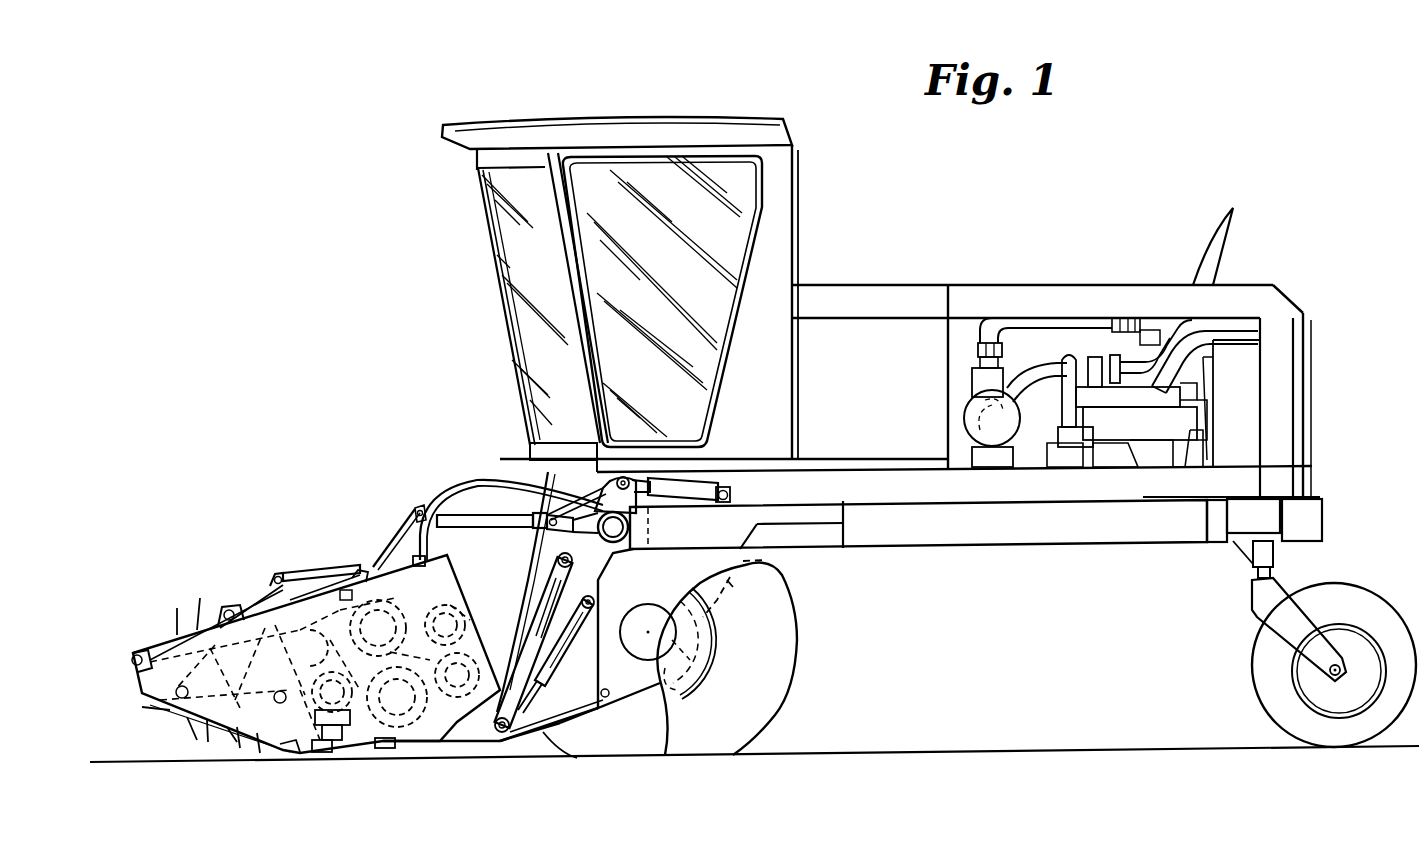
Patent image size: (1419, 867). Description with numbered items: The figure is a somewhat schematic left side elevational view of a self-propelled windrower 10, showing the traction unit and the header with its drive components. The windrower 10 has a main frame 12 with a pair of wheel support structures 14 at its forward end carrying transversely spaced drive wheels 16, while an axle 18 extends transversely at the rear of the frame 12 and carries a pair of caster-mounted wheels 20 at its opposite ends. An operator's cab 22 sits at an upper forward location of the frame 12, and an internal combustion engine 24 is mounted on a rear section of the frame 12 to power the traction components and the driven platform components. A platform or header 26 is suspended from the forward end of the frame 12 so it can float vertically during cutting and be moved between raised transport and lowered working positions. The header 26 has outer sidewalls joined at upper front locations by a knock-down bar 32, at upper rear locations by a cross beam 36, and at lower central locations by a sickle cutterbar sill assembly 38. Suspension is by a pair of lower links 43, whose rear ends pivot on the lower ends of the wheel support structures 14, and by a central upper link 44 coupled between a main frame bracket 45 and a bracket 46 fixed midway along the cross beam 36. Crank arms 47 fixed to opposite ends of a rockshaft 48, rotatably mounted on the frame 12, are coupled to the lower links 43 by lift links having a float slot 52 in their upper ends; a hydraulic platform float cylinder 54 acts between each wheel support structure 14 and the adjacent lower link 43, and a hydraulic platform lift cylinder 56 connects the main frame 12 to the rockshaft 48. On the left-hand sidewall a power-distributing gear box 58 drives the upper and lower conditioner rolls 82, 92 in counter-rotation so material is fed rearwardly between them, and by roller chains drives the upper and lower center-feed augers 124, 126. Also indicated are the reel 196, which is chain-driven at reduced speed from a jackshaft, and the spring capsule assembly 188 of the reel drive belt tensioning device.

The self-propelled windrower 10 is at (430, 227).
The main frame 12 is at (973, 530).
The wheel support structures 14 is at (733, 582).
The drive wheels 16 is at (790, 680).
The axle 18 is at (1277, 558).
The caster-mounted wheels 20 is at (1253, 677).
The operator's cab 22 is at (650, 118).
The internal combustion engine 24 is at (1070, 340).
The platform or header 26 is at (322, 500).
The knock-down bar 32 is at (142, 650).
The cross beam 36 is at (353, 573).
The sickle cutterbar sill assembly 38 is at (292, 780).
The lower links 43 is at (483, 743).
The upper link 44 is at (488, 518).
The main frame bracket 45 is at (585, 530).
The bracket 46 is at (400, 533).
The crank arms 47 is at (583, 535).
The rockshaft 48 is at (633, 530).
The float slot 52 is at (537, 637).
The hydraulic platform float cylinder 54 is at (580, 640).
The hydraulic platform lift cylinder 56 is at (707, 457).
The power-distributing gear box 58 is at (443, 555).
The upper conditioner roll 82 is at (485, 603).
The lower conditioner roll 92 is at (442, 743).
The upper center-feed auger 124 is at (313, 573).
The lower center-feed auger 126 is at (367, 743).
The spring capsule assembly 188 is at (330, 555).
The reel 196 is at (233, 607).